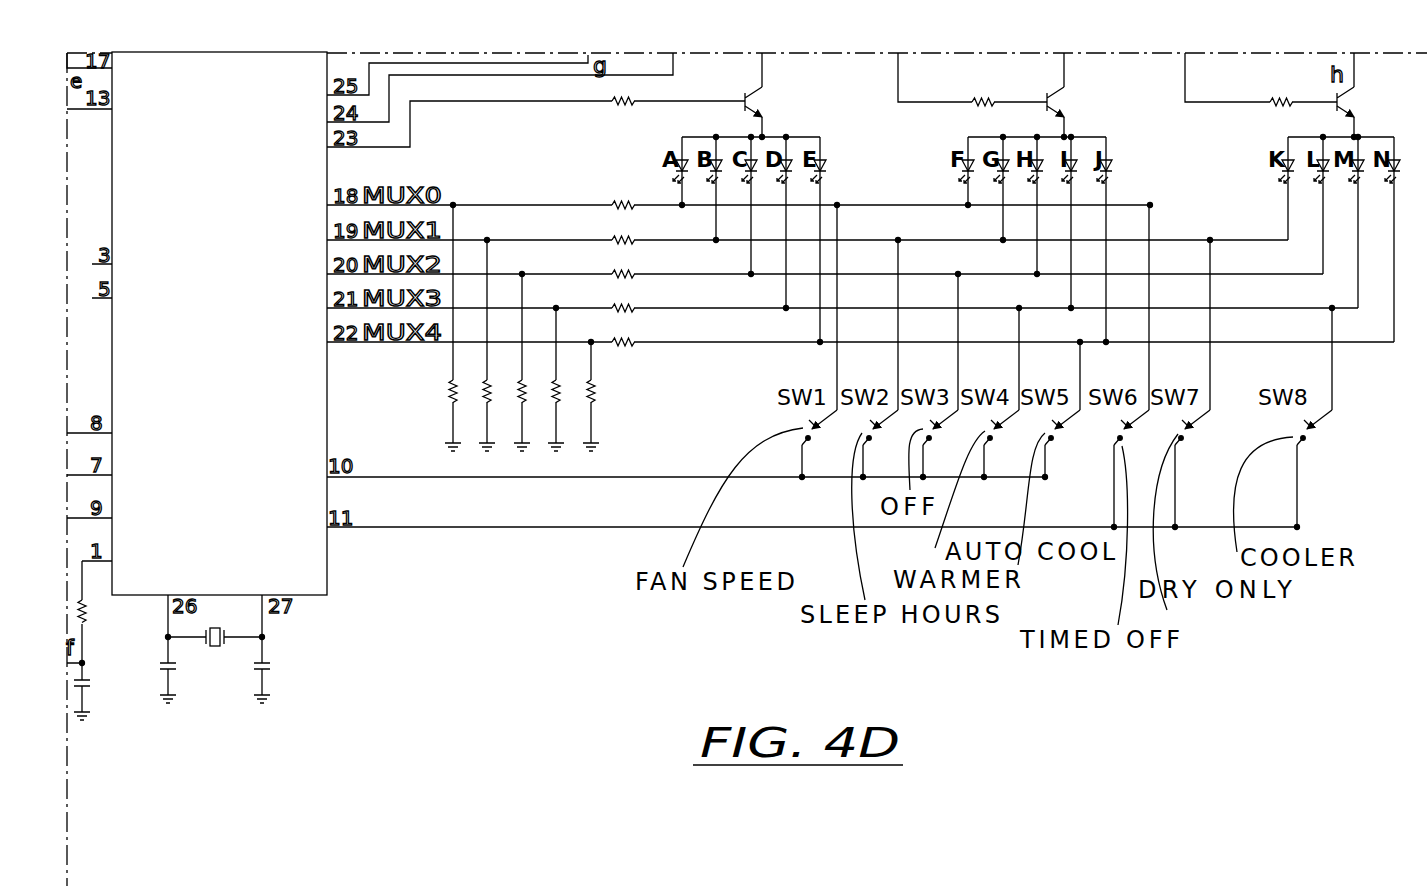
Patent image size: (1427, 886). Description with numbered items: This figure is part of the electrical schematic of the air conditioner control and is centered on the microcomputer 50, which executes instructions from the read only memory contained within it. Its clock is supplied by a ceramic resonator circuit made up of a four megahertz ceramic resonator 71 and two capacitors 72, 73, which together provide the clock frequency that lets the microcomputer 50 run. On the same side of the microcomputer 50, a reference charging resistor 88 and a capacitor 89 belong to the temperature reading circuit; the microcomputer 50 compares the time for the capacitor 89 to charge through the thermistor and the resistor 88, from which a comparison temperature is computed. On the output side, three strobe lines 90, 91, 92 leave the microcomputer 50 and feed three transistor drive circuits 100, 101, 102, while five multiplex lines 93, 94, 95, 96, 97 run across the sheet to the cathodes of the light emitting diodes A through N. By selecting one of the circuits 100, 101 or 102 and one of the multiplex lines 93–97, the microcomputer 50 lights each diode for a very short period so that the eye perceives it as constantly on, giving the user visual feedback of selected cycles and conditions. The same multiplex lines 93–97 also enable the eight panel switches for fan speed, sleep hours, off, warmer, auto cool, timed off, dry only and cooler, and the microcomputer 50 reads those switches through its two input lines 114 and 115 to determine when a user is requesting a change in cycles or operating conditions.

The microcomputer 50 is at (221, 234).
The ceramic resonator 71 is at (212, 650).
The capacitor 72 is at (160, 666).
The capacitor 73 is at (270, 667).
The reference charging resistor 88 is at (88, 606).
The capacitor 89 is at (90, 690).
The strobe line 90 is at (425, 64).
The strobe line 91 is at (505, 77).
The strobe line 92 is at (563, 103).
The multiplex line 93 is at (453, 203).
The multiplex line 94 is at (447, 232).
The multiplex line 95 is at (447, 265).
The multiplex line 96 is at (447, 299).
The multiplex line 97 is at (447, 333).
The circuit 100 is at (768, 70).
The circuit 101 is at (1072, 74).
The circuit 102 is at (1385, 102).
The input line 114 is at (630, 477).
The input line 115 is at (503, 528).